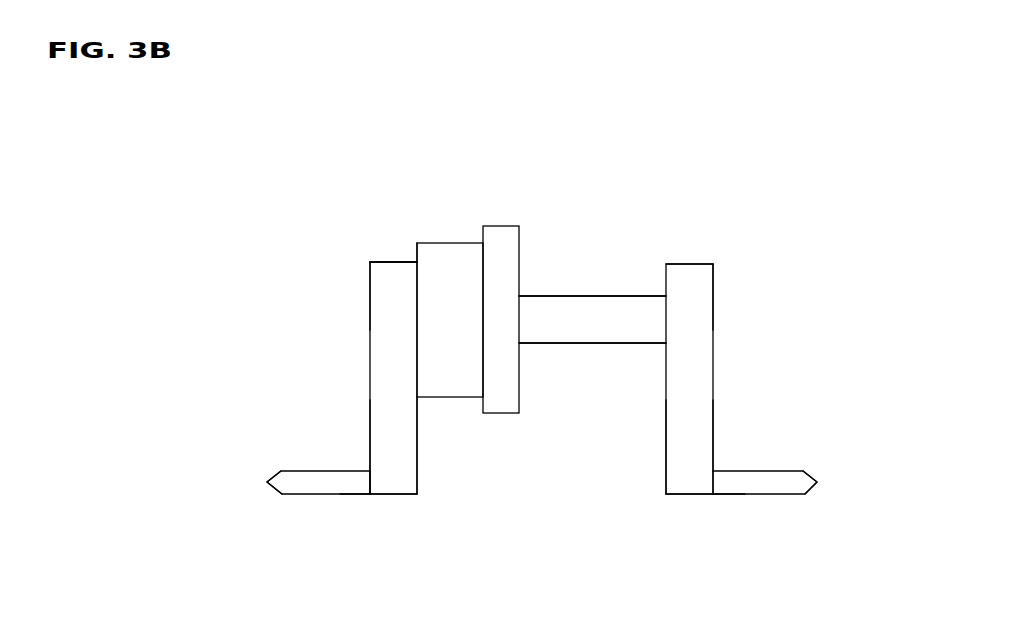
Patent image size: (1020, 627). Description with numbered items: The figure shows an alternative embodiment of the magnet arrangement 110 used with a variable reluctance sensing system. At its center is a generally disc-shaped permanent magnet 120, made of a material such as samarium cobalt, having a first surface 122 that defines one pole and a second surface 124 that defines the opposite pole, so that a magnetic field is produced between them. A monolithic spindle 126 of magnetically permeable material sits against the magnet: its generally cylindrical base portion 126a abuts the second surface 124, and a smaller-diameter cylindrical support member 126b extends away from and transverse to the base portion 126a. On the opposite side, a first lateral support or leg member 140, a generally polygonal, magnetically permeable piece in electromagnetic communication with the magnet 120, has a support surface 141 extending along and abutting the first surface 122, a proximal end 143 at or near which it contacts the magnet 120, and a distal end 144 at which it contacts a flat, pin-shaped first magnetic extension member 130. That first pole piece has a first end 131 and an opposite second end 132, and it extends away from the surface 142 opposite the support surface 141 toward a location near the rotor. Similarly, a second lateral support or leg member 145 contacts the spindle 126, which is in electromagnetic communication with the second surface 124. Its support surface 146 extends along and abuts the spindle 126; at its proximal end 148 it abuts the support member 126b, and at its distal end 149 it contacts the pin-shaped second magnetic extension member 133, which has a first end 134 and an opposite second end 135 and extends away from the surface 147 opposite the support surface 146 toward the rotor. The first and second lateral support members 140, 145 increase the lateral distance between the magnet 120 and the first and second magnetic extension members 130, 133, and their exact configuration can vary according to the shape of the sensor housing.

The magnet arrangement 110 is at (298, 199).
The permanent magnet 120 is at (460, 365).
The first surface 122 is at (410, 260).
The second surface 124 is at (485, 272).
The monolithic spindle 126 is at (503, 407).
The base portion 126a is at (497, 292).
The support member 126b is at (598, 310).
The first magnetic extension member 130 is at (323, 488).
The first end 131 is at (368, 492).
The second end 132 is at (266, 482).
The second magnetic extension member 133 is at (755, 488).
The first end 134 is at (717, 491).
The second end 135 is at (820, 482).
The first lateral support member 140 is at (385, 347).
The support surface 141 is at (418, 447).
The surface 142 is at (369, 436).
The proximal end 143 is at (383, 293).
The distal end 144 is at (395, 495).
The second lateral support member 145 is at (700, 347).
The support surface 146 is at (665, 456).
The surface 147 is at (715, 433).
The proximal end 148 is at (700, 303).
The distal end 149 is at (688, 495).